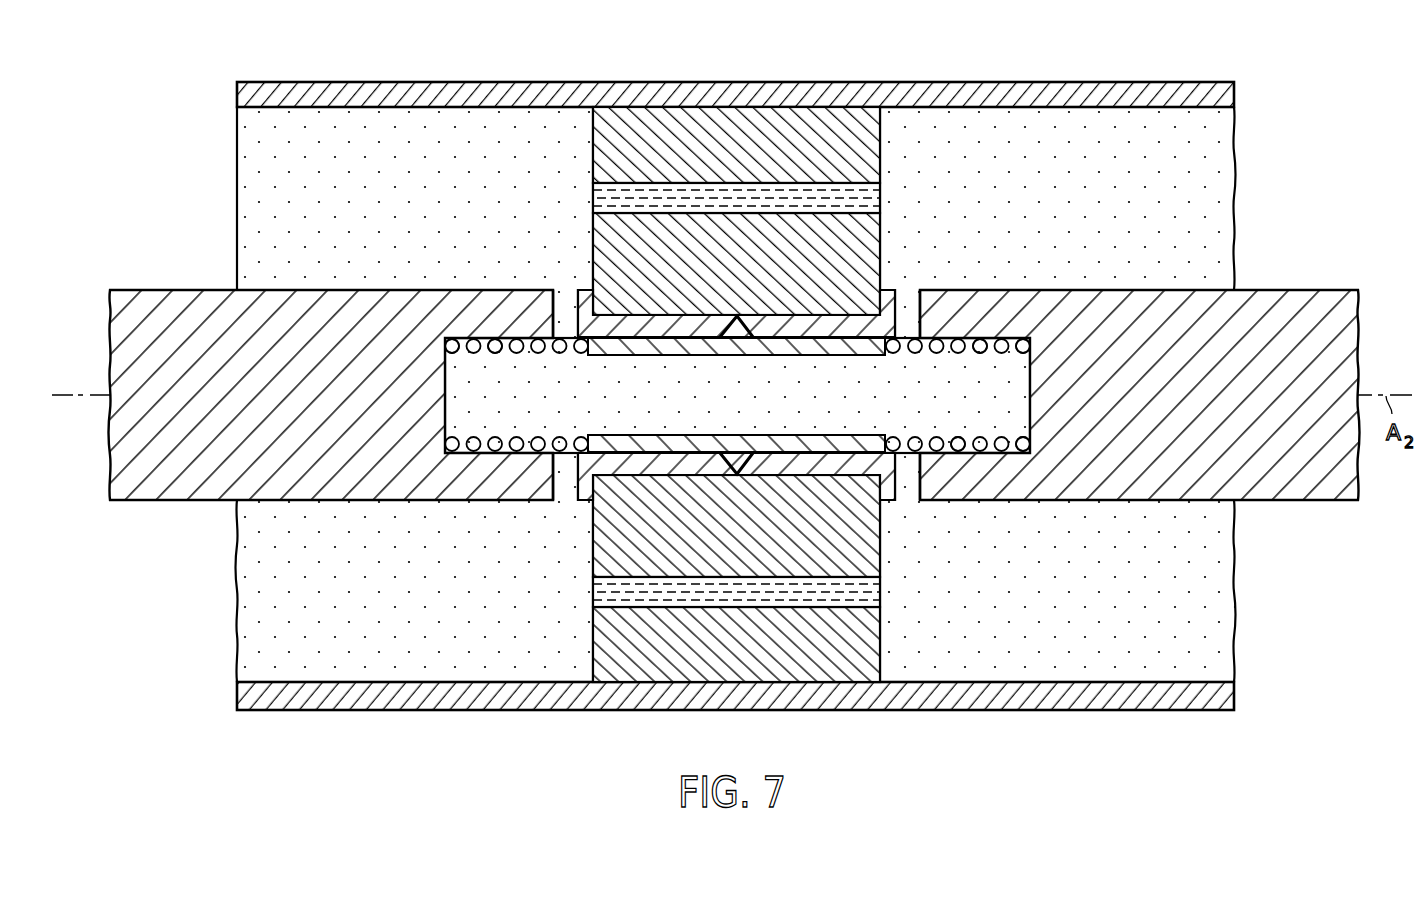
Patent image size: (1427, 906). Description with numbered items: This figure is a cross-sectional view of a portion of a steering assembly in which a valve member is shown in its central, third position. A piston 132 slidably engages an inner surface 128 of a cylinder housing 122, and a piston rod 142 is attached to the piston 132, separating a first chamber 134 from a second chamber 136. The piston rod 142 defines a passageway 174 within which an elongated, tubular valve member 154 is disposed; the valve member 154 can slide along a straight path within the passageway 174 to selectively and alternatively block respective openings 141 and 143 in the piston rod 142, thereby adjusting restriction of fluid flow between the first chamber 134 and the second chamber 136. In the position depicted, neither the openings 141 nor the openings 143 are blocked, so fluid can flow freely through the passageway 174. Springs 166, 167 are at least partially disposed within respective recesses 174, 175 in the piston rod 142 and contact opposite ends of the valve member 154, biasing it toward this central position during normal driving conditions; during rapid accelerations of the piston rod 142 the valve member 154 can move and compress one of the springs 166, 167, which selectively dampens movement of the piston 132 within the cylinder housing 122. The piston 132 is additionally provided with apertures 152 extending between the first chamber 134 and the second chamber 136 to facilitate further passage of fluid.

The cylinder housing 122 is at (1028, 92).
The inner surface 128 is at (1085, 108).
The piston 132 is at (759, 157).
The first chamber 134 is at (427, 192).
The second chamber 136 is at (1082, 192).
The openings 141 is at (553, 312).
The piston rod 142 is at (259, 411).
The openings 143 is at (918, 312).
The apertures 152 is at (800, 213).
The valve member 154 is at (650, 435).
The spring 166 is at (495, 338).
The spring 167 is at (980, 338).
The passageway 174 is at (759, 411).
The recess 175 is at (966, 441).